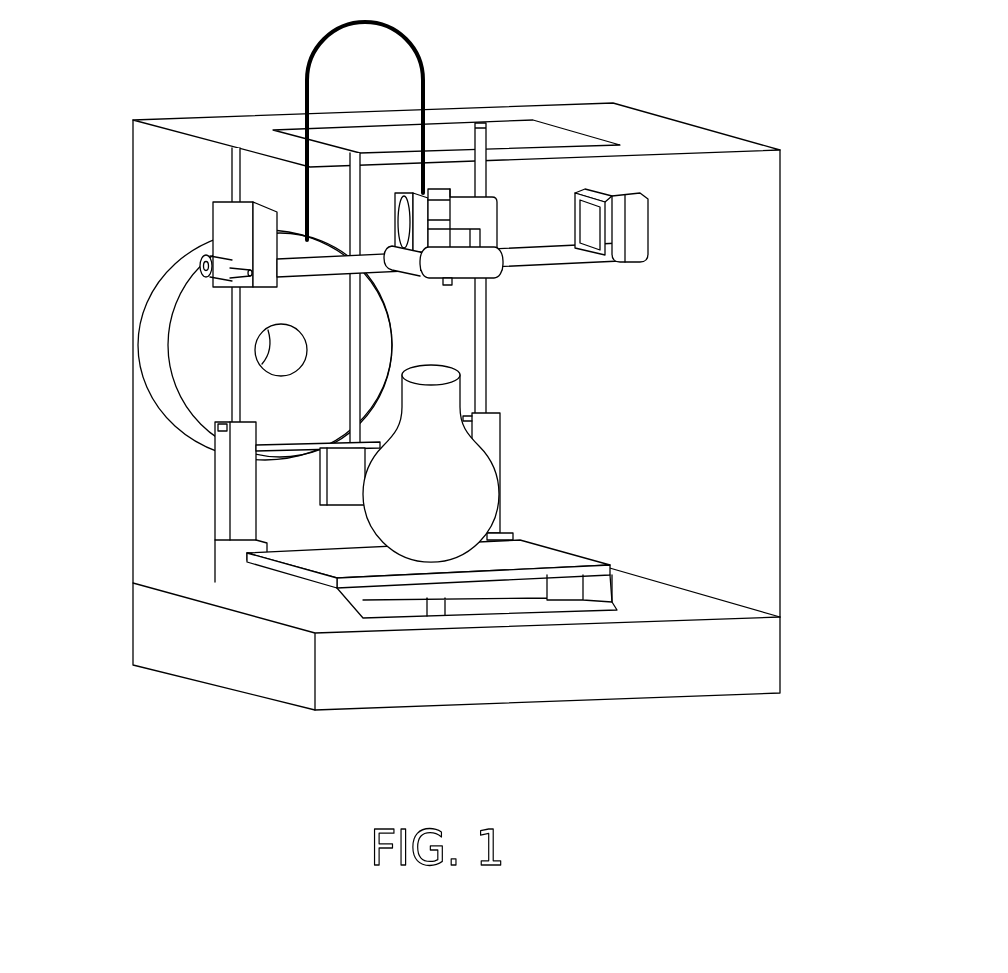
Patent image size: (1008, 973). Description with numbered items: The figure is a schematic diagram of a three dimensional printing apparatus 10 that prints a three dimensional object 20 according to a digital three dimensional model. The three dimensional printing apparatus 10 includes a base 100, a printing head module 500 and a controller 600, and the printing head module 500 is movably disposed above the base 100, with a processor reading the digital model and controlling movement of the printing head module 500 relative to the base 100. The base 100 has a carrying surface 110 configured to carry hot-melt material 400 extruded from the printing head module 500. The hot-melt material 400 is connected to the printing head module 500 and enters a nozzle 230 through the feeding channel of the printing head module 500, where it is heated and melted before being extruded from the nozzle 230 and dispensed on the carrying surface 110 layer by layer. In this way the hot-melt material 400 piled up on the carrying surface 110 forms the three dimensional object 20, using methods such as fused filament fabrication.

The three dimensional printing apparatus 10 is at (853, 719).
The three dimensional object 20 is at (397, 490).
The base 100 is at (557, 529).
The carrying surface 110 is at (534, 550).
The nozzle 230 is at (448, 285).
The hot-melt material 400 is at (426, 67).
The printing head module 500 is at (559, 166).
The controller 600 is at (487, 212).